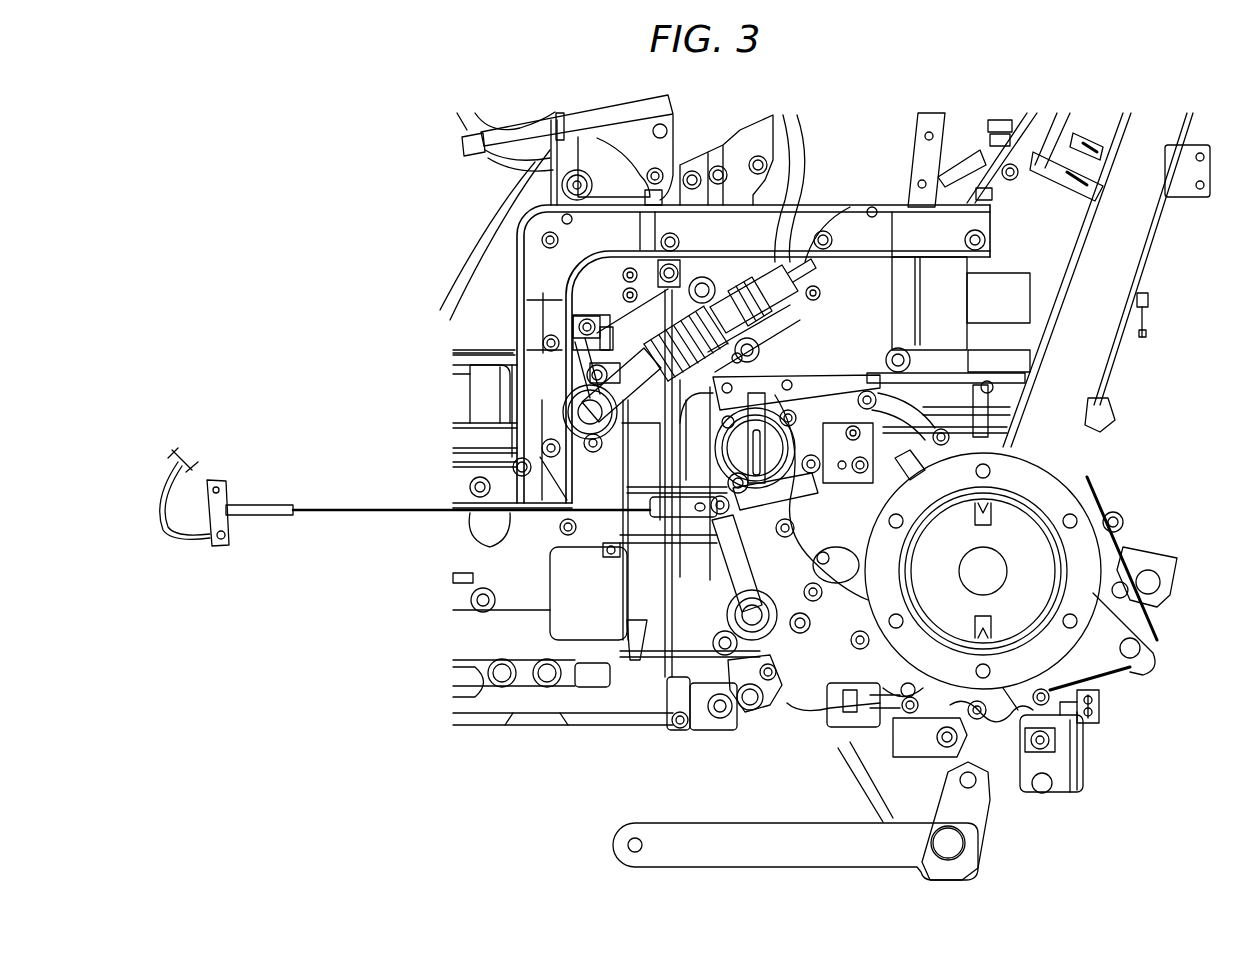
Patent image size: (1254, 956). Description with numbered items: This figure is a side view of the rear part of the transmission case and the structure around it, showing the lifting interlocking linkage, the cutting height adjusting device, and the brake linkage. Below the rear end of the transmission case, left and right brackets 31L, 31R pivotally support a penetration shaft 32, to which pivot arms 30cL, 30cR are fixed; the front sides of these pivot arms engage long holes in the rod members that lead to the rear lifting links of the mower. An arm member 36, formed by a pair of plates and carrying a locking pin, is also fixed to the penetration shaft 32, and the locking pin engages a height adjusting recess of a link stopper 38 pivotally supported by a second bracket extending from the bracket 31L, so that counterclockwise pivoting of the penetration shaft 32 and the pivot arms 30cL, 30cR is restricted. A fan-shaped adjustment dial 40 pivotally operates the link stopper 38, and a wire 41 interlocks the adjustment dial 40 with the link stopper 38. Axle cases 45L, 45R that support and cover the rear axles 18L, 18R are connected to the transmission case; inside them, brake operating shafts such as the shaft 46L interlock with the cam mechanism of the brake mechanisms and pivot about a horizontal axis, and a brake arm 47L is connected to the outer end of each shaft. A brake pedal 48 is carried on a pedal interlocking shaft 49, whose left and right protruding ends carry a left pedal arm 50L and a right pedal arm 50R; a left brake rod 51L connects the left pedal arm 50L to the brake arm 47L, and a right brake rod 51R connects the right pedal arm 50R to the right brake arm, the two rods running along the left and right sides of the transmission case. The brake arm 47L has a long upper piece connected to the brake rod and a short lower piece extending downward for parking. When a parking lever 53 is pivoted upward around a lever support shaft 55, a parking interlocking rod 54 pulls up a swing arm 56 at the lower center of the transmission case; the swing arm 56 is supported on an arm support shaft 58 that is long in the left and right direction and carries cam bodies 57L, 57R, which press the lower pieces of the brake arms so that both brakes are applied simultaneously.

The rear axle 18L is at (1052, 571).
The rear axle 18R is at (993, 566).
The pivot arm 30cL is at (795, 880).
The pivot arm 30cR is at (795, 880).
The bracket 31L is at (828, 783).
The bracket 31R is at (855, 755).
The penetration shaft 32 is at (918, 852).
The arm member 36 is at (970, 807).
The link stopper 38 is at (992, 752).
The adjustment dial 40 is at (548, 262).
The wire 41 is at (576, 401).
The axle case 45L is at (1129, 741).
The axle case 45R is at (1085, 720).
The brake operating shaft 46L is at (746, 618).
The brake arm 47L is at (725, 522).
The brake pedal 48 is at (183, 452).
The pedal interlocking shaft 49 is at (221, 541).
The left pedal arm 50L is at (266, 515).
The right pedal arm 50R is at (228, 523).
The left brake rod 51L is at (438, 491).
The right brake rod 51R is at (273, 500).
The parking lever 53 is at (622, 107).
The parking interlocking rod 54 is at (661, 315).
The lever support shaft 55 is at (708, 150).
The swing arm 56 is at (708, 715).
The cam body 57L is at (771, 725).
The cam body 57R is at (738, 728).
The arm support shaft 58 is at (720, 720).